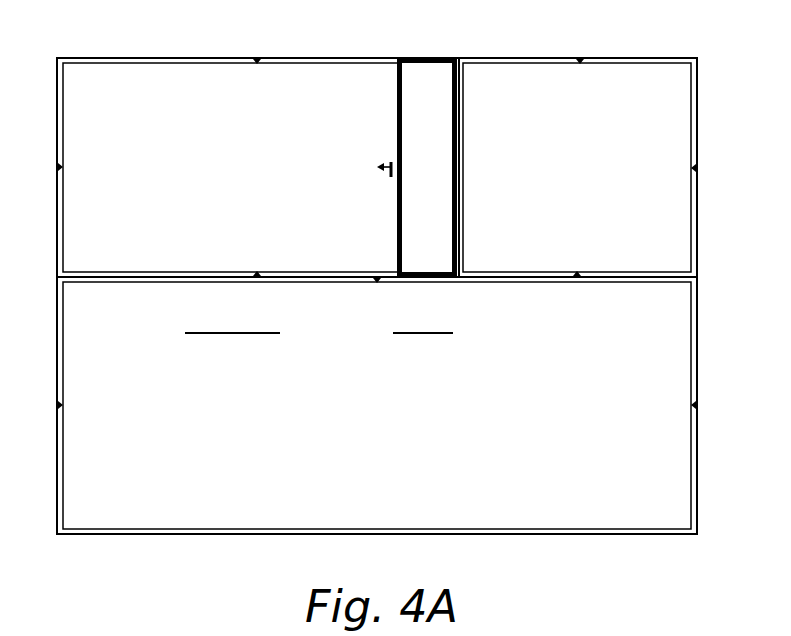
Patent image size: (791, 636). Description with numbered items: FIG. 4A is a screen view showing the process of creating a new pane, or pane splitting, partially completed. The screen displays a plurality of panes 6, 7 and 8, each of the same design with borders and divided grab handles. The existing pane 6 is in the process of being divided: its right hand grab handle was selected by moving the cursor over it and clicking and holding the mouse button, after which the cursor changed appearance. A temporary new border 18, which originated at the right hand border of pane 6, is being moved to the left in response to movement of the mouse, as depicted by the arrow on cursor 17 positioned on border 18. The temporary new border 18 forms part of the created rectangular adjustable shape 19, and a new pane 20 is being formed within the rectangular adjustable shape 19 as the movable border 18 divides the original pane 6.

The pane 6 is at (116, 117).
The pane 7 is at (516, 120).
The pane 8 is at (116, 337).
The cursor 17 is at (357, 158).
The temporary new border 18 is at (380, 225).
The rectangular adjustable shape 19 is at (438, 50).
The new pane 20 is at (444, 180).